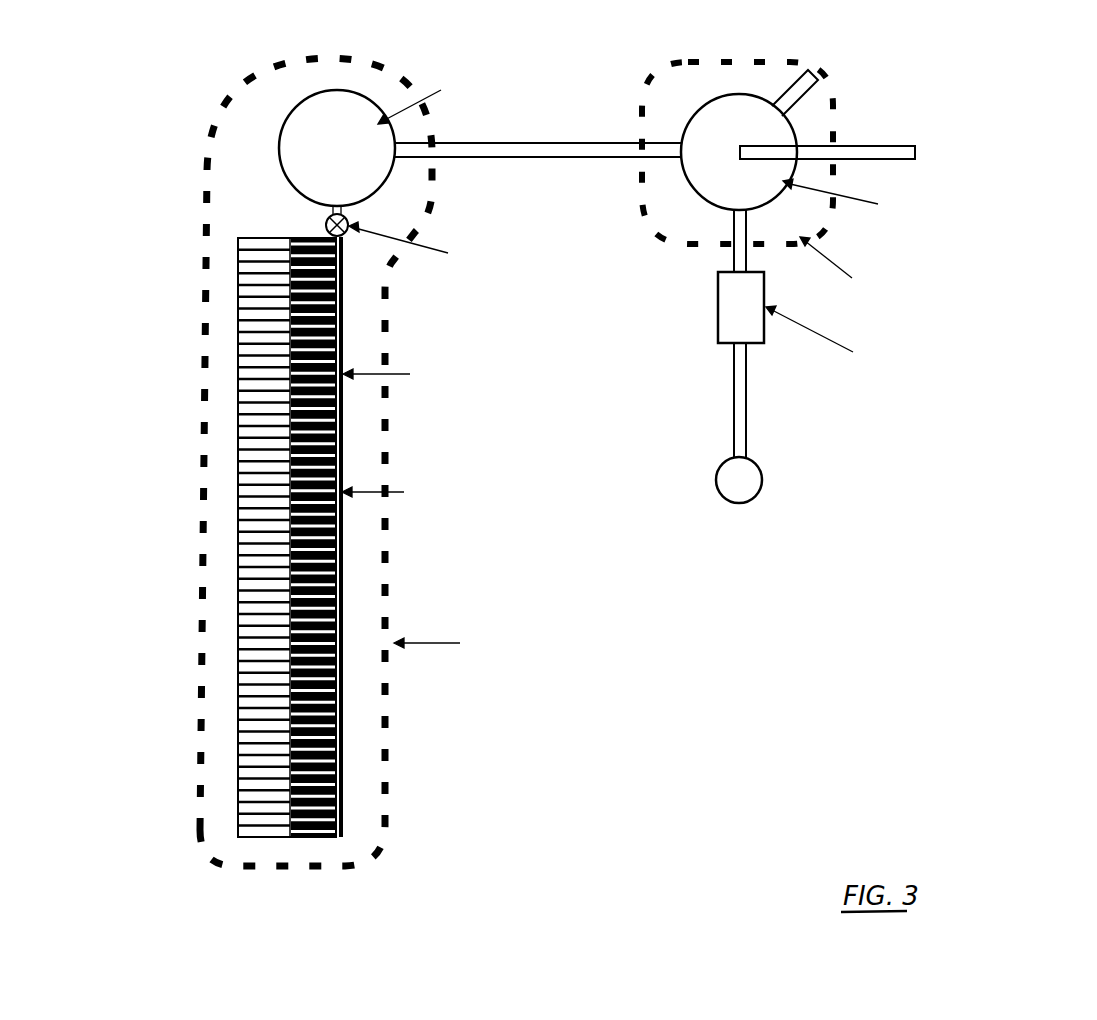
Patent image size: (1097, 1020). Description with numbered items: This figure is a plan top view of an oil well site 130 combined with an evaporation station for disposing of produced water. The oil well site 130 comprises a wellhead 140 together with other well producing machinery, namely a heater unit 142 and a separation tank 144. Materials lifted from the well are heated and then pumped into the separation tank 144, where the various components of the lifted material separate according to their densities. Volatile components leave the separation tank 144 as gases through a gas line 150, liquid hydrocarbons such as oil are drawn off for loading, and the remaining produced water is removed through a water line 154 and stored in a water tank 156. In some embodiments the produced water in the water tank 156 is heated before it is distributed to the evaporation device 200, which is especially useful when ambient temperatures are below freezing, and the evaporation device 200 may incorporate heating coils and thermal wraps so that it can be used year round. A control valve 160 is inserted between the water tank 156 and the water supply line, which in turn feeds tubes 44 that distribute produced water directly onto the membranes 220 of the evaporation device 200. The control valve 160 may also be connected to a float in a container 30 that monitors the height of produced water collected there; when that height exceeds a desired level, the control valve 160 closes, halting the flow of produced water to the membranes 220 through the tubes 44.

The container 30 is at (238, 832).
The tubes 44 is at (320, 838).
The oil well site 130 is at (709, 632).
The wellhead 140 is at (762, 478).
The heater unit 142 is at (715, 325).
The separation tank 144 is at (702, 190).
The gas line 150 is at (893, 146).
The water line 154 is at (560, 158).
The water tank 156 is at (295, 125).
The control valve 160 is at (336, 213).
The evaporation device 200 is at (218, 508).
The membranes 220 is at (331, 547).